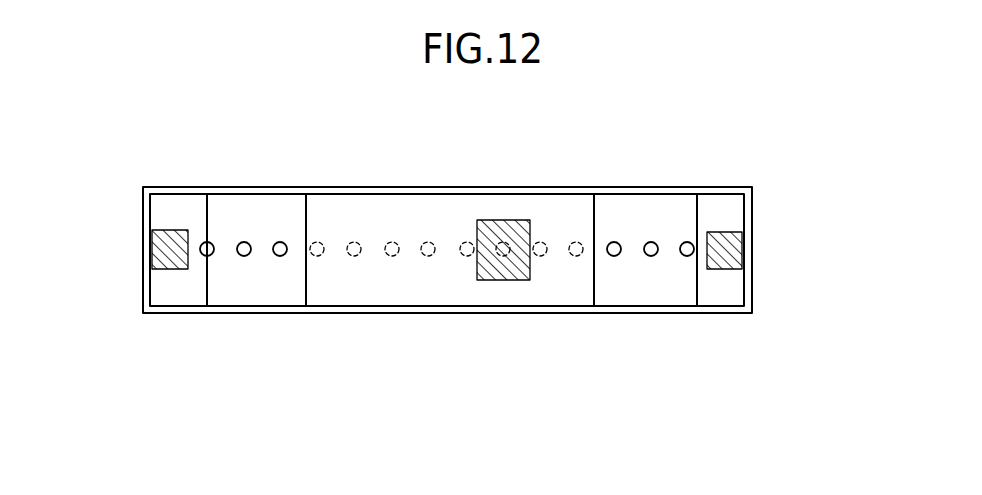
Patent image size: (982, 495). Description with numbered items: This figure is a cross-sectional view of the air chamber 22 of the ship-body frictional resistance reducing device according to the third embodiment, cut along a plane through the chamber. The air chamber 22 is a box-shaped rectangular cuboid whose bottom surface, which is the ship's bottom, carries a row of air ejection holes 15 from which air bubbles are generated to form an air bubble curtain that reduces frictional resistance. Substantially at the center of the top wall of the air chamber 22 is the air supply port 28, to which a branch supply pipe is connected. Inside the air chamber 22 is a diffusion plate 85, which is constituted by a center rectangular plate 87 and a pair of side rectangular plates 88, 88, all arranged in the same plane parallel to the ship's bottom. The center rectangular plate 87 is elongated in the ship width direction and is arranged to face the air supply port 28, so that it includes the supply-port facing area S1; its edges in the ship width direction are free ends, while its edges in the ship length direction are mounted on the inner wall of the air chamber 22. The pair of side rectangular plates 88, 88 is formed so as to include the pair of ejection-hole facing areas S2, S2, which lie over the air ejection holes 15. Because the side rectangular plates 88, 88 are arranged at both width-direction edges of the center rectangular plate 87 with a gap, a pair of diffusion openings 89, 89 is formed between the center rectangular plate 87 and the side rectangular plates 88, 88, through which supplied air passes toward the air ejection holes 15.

The air chamber 22 is at (648, 182).
The diffusion plate 85 is at (462, 408).
The side rectangular plates 88 is at (177, 293).
The center rectangular plate 87 is at (383, 293).
The diffusion openings 89 is at (613, 204).
The air ejection holes 15 is at (352, 257).
The air supply port 28 is at (482, 280).
The supply-port facing area S1 is at (528, 281).
The ejection-hole facing areas S2 is at (175, 229).